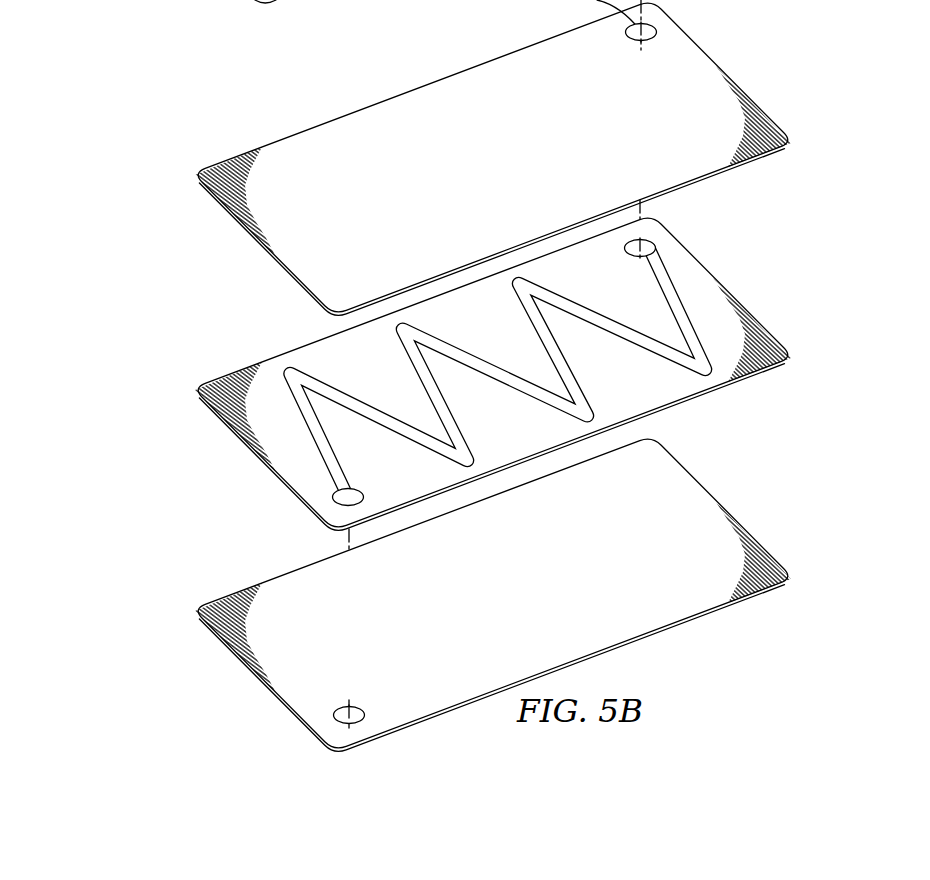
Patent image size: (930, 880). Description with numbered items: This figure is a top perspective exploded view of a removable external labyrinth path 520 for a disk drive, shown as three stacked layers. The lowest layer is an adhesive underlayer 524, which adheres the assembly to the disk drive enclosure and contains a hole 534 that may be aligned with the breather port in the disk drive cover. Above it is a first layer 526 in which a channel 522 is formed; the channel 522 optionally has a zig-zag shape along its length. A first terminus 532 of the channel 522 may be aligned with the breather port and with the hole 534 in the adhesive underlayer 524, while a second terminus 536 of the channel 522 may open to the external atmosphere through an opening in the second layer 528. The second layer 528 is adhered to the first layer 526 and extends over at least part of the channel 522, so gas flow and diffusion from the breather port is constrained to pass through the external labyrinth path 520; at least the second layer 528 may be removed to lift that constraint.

The external labyrinth path 520 is at (84, 350).
The channel 522 is at (352, 403).
The adhesive underlayer 524 is at (493, 595).
The first layer 526 is at (493, 364).
The second layer 528 is at (463, 87).
The first terminus 532 is at (352, 497).
The hole 534 is at (355, 712).
The second terminus 536 is at (657, 241).